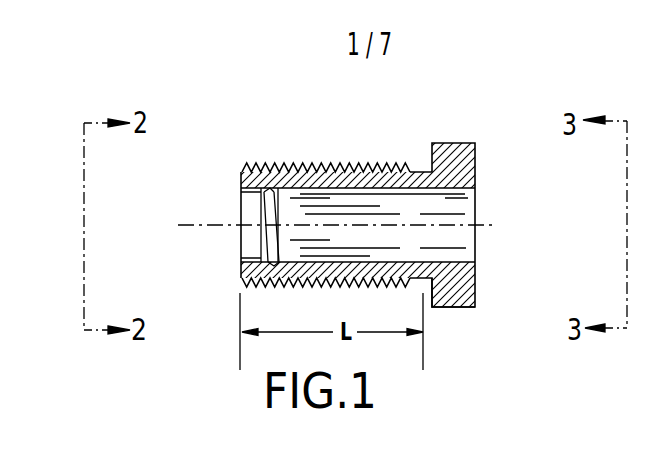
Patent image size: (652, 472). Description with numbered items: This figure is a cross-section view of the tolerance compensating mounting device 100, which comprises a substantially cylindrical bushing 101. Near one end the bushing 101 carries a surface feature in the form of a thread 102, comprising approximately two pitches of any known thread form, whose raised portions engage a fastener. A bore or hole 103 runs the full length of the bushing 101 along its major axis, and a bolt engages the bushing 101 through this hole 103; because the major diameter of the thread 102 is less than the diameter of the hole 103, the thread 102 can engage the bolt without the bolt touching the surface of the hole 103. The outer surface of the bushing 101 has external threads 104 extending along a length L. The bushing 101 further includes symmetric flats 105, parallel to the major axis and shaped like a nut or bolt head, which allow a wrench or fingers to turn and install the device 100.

The tolerance compensating mounting device 100 is at (357, 211).
The bushing 101 is at (459, 142).
The thread 102 is at (241, 200).
The bore or hole 103 is at (397, 213).
The external threads 104 is at (330, 165).
The symmetric flats 105 is at (453, 308).